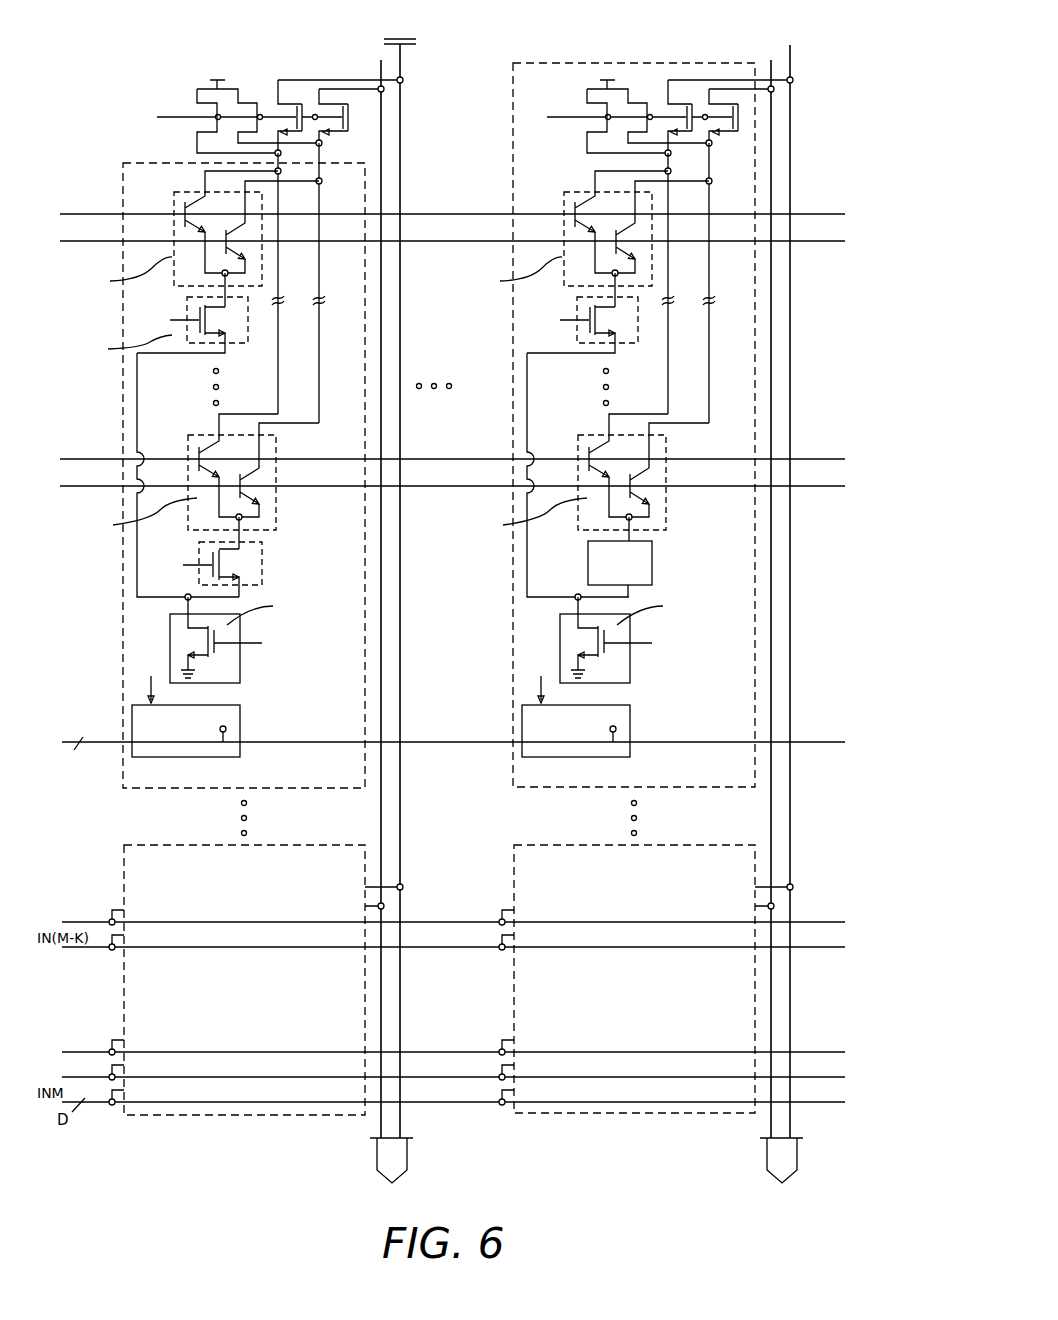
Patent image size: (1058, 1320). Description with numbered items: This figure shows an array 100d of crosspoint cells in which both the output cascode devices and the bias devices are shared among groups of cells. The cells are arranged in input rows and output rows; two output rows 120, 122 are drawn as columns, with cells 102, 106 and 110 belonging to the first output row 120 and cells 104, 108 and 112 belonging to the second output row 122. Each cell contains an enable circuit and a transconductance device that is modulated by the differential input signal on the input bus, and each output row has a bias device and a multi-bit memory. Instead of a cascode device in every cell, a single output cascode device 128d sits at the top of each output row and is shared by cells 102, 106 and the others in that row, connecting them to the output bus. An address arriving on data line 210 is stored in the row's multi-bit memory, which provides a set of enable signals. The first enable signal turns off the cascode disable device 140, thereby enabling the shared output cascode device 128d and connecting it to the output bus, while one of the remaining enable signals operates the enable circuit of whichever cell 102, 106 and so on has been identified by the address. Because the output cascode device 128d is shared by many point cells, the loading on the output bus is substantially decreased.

The array 100d is at (820, 30).
The cell 102 is at (198, 235).
The cell 104 is at (588, 235).
The cell 106 is at (198, 469).
The cell 108 is at (588, 469).
The cell 110 is at (313, 998).
The cell 112 is at (703, 998).
The output row 120 is at (232, 52).
The output row 122 is at (630, 52).
The output cascode device 128d is at (338, 76).
The cascode disable device 140 is at (194, 81).
The data line 210 is at (102, 742).